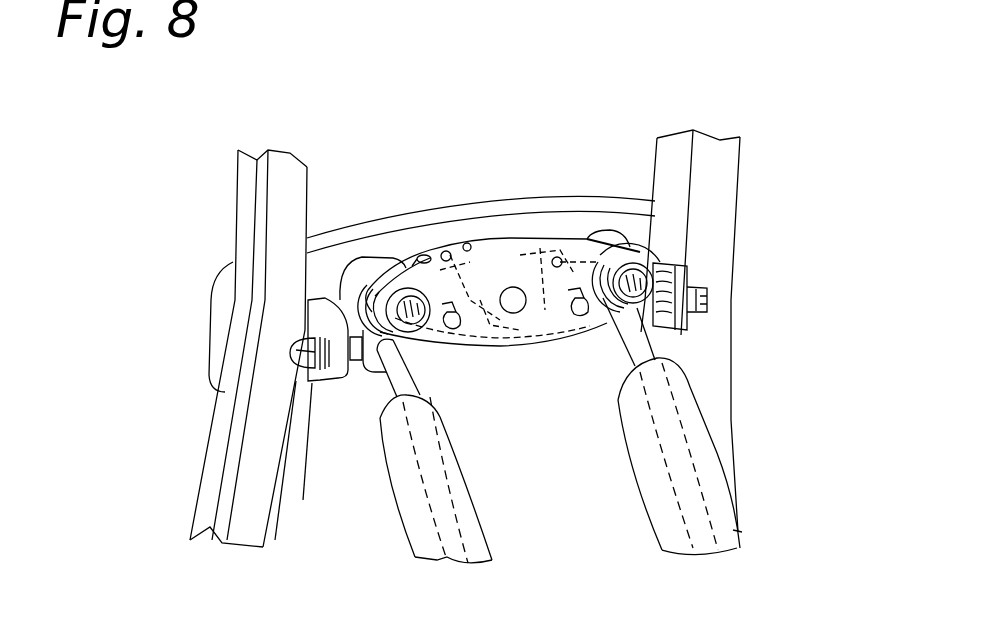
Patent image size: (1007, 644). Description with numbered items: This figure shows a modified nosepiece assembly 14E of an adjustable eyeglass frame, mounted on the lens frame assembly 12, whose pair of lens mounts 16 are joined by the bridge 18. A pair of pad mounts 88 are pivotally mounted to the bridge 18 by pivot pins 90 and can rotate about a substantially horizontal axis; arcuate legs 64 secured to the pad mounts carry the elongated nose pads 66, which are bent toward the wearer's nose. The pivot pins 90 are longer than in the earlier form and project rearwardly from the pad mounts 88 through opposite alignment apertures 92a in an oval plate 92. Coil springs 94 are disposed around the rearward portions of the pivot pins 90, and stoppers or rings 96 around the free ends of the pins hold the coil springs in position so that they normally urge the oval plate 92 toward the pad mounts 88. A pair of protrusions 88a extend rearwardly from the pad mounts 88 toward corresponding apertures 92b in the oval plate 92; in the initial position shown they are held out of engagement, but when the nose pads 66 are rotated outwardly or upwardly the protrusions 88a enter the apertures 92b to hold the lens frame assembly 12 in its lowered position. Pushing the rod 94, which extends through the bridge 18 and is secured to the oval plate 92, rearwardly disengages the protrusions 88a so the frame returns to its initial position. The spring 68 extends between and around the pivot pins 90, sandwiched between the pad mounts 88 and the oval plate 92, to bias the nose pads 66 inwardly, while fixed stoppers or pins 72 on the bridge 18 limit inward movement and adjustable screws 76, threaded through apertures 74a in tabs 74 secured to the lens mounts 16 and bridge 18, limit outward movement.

The lens frame assembly 12 is at (278, 132).
The nosepiece assembly 14E is at (610, 545).
The lens mounts 16 is at (247, 203).
The bridge 18 is at (334, 232).
The arcuate legs 64 is at (392, 384).
The nose pads 66 is at (475, 517).
The spring 68 is at (467, 243).
The stoppers or pins 72 is at (421, 255).
The tabs 74 is at (308, 303).
The threaded apertures 74a is at (307, 460).
The adjustable screws 76 is at (298, 362).
The pad mounts 88 is at (367, 263).
The protrusions 88a is at (447, 250).
The pivot pins 90 is at (690, 322).
The oval plate 92 is at (508, 257).
The alignment apertures 92a is at (628, 257).
The apertures 92b is at (457, 330).
The coil springs 94 is at (372, 288).
The stoppers or rings 96 is at (670, 270).